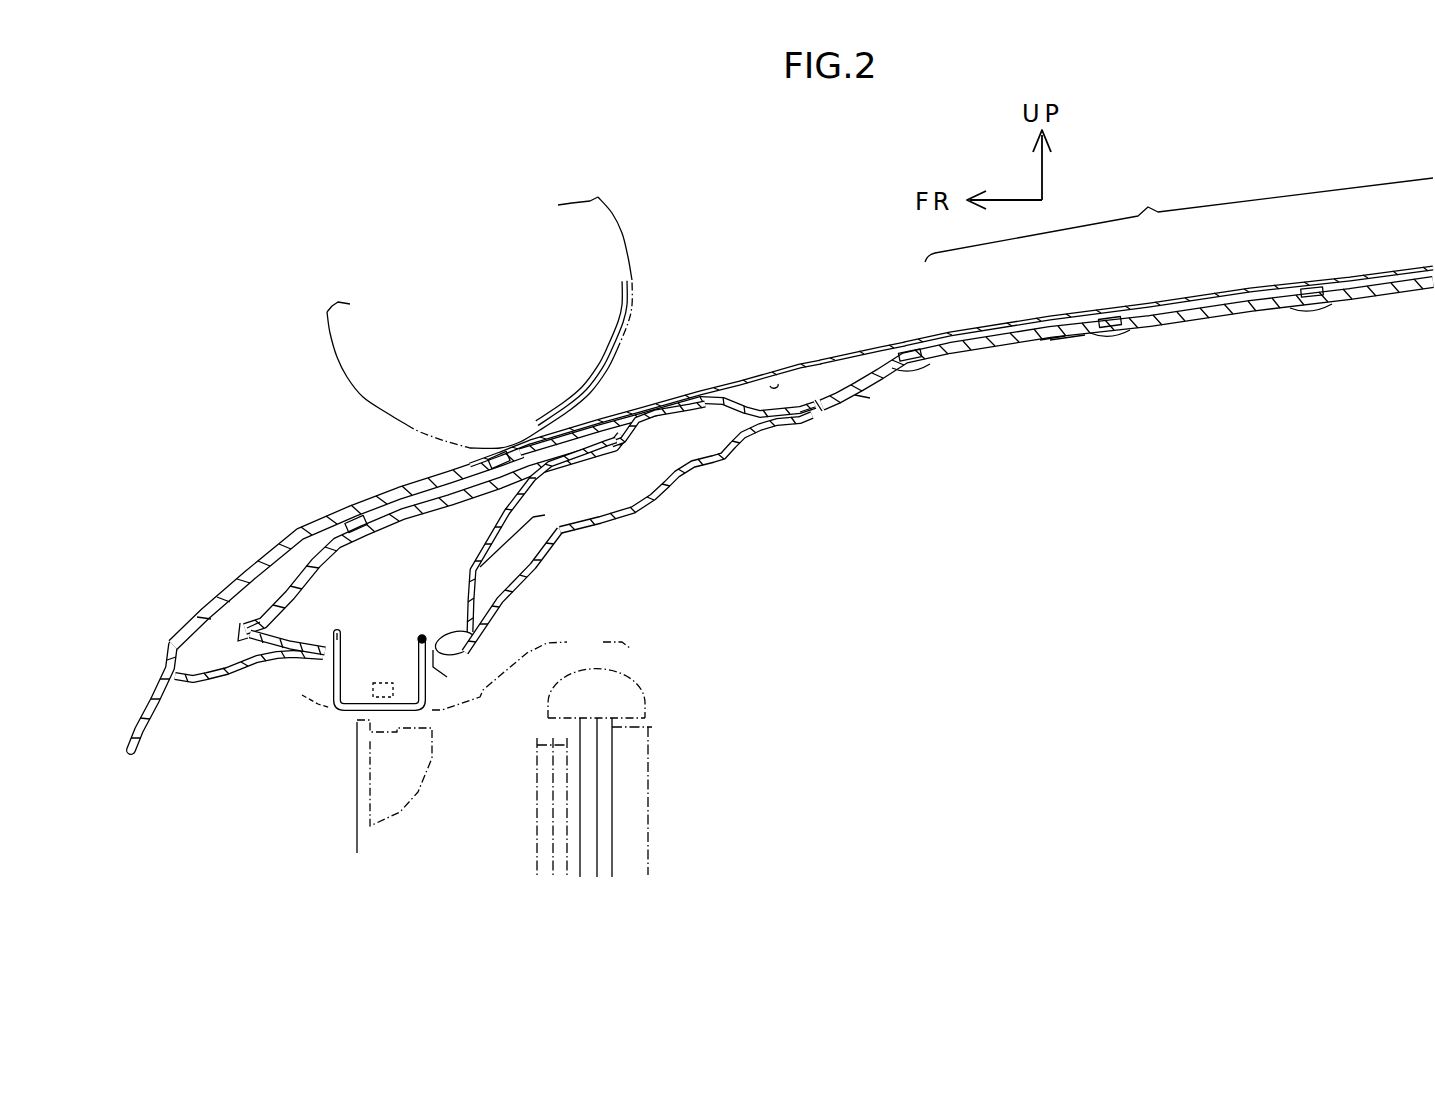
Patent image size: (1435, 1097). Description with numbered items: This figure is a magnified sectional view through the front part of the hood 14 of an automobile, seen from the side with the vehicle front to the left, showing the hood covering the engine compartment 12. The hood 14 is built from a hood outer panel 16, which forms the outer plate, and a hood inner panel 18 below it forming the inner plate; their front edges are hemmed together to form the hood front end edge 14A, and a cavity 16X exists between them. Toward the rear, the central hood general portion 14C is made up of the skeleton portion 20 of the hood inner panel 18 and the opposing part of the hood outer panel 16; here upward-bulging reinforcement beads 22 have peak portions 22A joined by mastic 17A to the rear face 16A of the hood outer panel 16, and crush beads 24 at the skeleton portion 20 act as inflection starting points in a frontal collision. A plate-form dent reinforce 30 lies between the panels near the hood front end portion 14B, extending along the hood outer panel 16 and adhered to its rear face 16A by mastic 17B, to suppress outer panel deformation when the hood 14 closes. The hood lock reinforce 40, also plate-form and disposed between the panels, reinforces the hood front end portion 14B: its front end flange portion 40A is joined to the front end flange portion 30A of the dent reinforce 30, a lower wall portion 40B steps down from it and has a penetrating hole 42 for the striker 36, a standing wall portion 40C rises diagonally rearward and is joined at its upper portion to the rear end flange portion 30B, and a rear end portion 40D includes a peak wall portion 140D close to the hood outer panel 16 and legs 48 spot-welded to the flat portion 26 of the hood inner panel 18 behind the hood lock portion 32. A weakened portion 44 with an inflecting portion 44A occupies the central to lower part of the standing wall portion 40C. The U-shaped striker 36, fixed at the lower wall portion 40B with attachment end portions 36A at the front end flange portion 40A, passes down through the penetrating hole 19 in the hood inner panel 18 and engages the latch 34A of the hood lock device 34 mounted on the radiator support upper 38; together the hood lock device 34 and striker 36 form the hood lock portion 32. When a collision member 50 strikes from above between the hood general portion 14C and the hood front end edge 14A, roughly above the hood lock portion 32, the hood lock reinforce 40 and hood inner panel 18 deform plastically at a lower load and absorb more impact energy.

The engine compartment 12 is at (797, 632).
The hood 14 is at (850, 345).
The hood front end edge 14A is at (136, 685).
The hood front end portion 14B is at (303, 520).
The hood general portion 14C is at (1179, 217).
The hood outer panel 16 is at (801, 360).
The rear face of hood outer panel 16A is at (774, 385).
The cavity 16X is at (851, 378).
The mastic 17A is at (1318, 288).
The mastic 17B is at (480, 455).
The hood inner panel 18 is at (862, 407).
The penetrating hole 19 is at (448, 678).
The skeleton portion 20 is at (1067, 352).
The reinforcement beads 22 is at (1020, 330).
The peak portion 22A is at (1052, 333).
The crush beads 24 is at (1290, 312).
The flat portion 26 is at (828, 397).
The dent reinforce 30 is at (400, 500).
The front end flange portion of dent reinforce 30A is at (248, 614).
The rear end flange portion of dent reinforce 30B is at (608, 428).
The hood lock portion 32 is at (320, 719).
The hood lock device 34 is at (356, 768).
The latch 34A is at (299, 687).
The striker 36 is at (360, 681).
The attachment end portions 36A is at (422, 634).
The radiator support upper 38 is at (347, 828).
The hood lock reinforce 40 is at (496, 513).
The front end flange portion of hood lock reinforce 40A is at (239, 674).
The lower wall portion 40B is at (480, 644).
The standing wall portion 40C is at (497, 590).
The rear end portion 40D is at (718, 420).
The peak wall portion 140D is at (700, 397).
The penetrating hole 42 is at (330, 632).
The weakened portion 44 is at (500, 570).
The inflecting portion 44A is at (536, 518).
The legs 48 is at (792, 415).
The collision member 50 is at (620, 232).